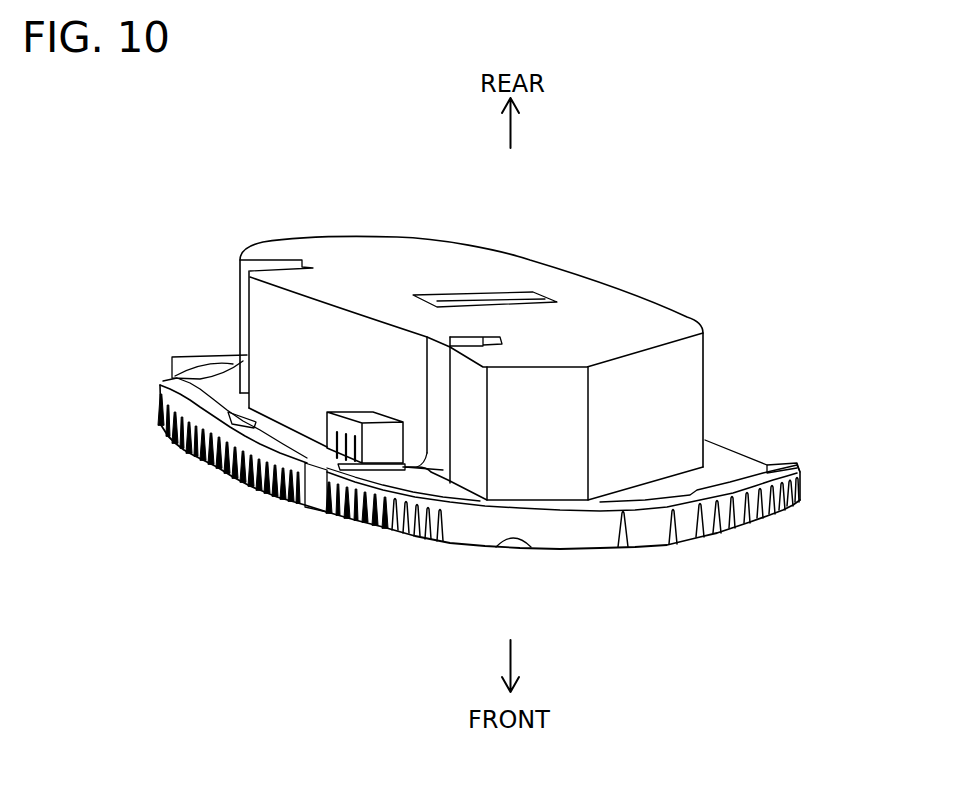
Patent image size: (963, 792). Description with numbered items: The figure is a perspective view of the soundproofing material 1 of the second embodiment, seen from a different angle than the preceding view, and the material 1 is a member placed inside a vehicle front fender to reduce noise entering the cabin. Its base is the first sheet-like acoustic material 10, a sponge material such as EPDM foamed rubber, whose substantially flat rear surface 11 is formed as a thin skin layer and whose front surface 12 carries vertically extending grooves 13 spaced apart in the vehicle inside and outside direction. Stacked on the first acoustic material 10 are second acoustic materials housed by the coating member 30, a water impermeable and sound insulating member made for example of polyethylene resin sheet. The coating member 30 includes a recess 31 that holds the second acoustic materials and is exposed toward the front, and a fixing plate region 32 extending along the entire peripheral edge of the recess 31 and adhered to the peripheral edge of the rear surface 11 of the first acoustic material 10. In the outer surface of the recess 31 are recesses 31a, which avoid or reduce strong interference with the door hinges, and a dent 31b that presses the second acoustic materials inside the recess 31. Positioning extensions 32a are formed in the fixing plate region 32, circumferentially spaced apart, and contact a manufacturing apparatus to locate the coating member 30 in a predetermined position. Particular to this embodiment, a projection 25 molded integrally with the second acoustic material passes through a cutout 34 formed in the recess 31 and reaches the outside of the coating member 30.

The soundproofing material 1 is at (698, 236).
The first sheet-like acoustic material 10 is at (572, 557).
The rear surface 11 is at (801, 471).
The front surface 12 is at (478, 548).
The grooves 13 is at (660, 536).
The projection 25 is at (363, 412).
The coating member 30 is at (692, 316).
The recess 31 is at (599, 301).
The recesses 31a is at (303, 262).
The dent 31b is at (511, 296).
The fixing plate region 32 is at (727, 460).
The positioning extensions 32a is at (162, 381).
The cutout 34 is at (398, 443).